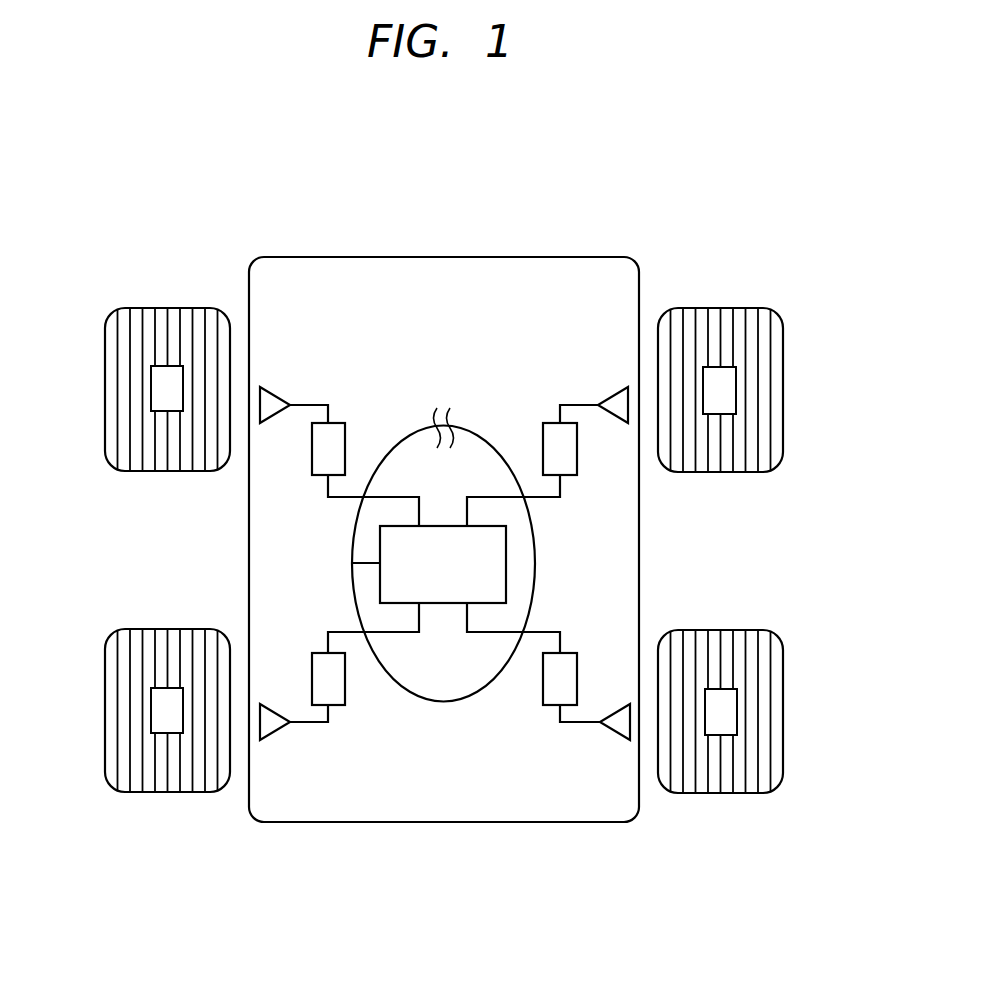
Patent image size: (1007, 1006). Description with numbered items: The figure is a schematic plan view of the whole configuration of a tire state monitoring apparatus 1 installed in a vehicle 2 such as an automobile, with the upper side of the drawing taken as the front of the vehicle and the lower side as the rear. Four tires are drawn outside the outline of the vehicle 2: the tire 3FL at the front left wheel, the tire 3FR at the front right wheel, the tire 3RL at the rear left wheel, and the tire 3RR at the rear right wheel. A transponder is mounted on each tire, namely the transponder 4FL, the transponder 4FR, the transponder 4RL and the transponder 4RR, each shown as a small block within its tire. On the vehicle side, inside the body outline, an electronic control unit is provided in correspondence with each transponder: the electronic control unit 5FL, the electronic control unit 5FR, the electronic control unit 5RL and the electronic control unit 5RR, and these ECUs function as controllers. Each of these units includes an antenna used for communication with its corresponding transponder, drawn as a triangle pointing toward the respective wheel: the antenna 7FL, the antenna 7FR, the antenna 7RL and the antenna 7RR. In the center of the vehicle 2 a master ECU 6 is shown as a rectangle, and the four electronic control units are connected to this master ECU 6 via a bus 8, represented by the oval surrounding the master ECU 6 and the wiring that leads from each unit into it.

The tire state monitoring apparatus 1 is at (687, 130).
The vehicle 2 is at (527, 257).
The tire 3FL is at (112, 334).
The tire 3FR is at (773, 340).
The tire 3RL is at (113, 660).
The tire 3RR is at (774, 660).
The transponder 4FL is at (162, 366).
The transponder 4FR is at (722, 367).
The transponder 4RL is at (168, 733).
The transponder 4RR is at (725, 735).
The electronic control unit 5FL is at (337, 437).
The electronic control unit 5FR is at (552, 443).
The electronic control unit 5RL is at (340, 687).
The electronic control unit 5RR is at (552, 677).
The master ECU 6 is at (506, 560).
The antenna 7FL is at (307, 405).
The antenna 7FR is at (585, 405).
The antenna 7RL is at (305, 723).
The antenna 7RR is at (582, 723).
The bus 8 is at (352, 537).